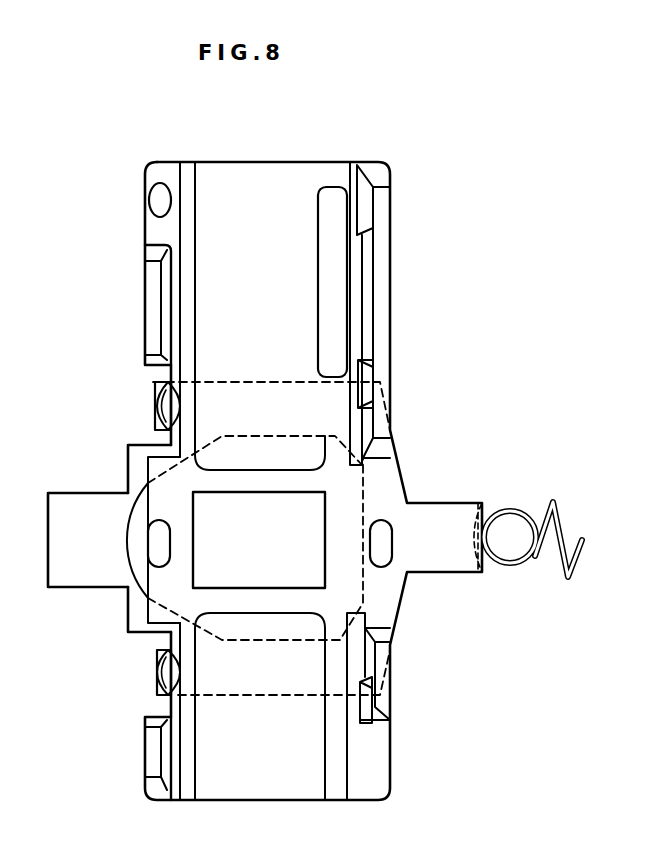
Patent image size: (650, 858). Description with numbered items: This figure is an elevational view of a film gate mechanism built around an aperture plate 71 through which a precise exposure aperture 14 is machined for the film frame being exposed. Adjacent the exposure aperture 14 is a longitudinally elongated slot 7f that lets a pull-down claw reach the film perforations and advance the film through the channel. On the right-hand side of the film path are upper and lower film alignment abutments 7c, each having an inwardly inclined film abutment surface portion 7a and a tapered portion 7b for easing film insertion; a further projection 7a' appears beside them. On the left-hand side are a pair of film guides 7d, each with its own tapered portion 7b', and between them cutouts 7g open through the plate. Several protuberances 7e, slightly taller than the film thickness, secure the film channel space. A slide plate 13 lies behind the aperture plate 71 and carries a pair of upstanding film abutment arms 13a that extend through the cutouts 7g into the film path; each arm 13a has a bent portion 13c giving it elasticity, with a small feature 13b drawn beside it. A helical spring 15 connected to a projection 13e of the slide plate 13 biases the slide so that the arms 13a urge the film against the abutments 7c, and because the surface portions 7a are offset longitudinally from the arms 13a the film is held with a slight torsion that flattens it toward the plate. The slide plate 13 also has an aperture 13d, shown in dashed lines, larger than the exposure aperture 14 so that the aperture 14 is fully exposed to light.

The aperture plate 71 is at (222, 183).
The film abutment surface portion 7a is at (318, 481).
The projection 7a' is at (364, 291).
The tapered portion 7b is at (399, 463).
The tapered portion 7b' is at (192, 520).
The film alignment abutment 7c is at (378, 668).
The film guide 7d is at (150, 303).
The protuberance 7e is at (152, 200).
The longitudinally elongated slot 7f is at (318, 215).
The cutout 7g is at (148, 612).
The slide plate 13 is at (76, 578).
The film abutment arm 13a is at (178, 405).
The protrusion 13b is at (160, 410).
The bent portion 13c is at (157, 385).
The aperture of slide plate 13d is at (146, 571).
The projection 13e is at (478, 520).
The exposure aperture 14 is at (312, 532).
The helical spring 15 is at (507, 565).